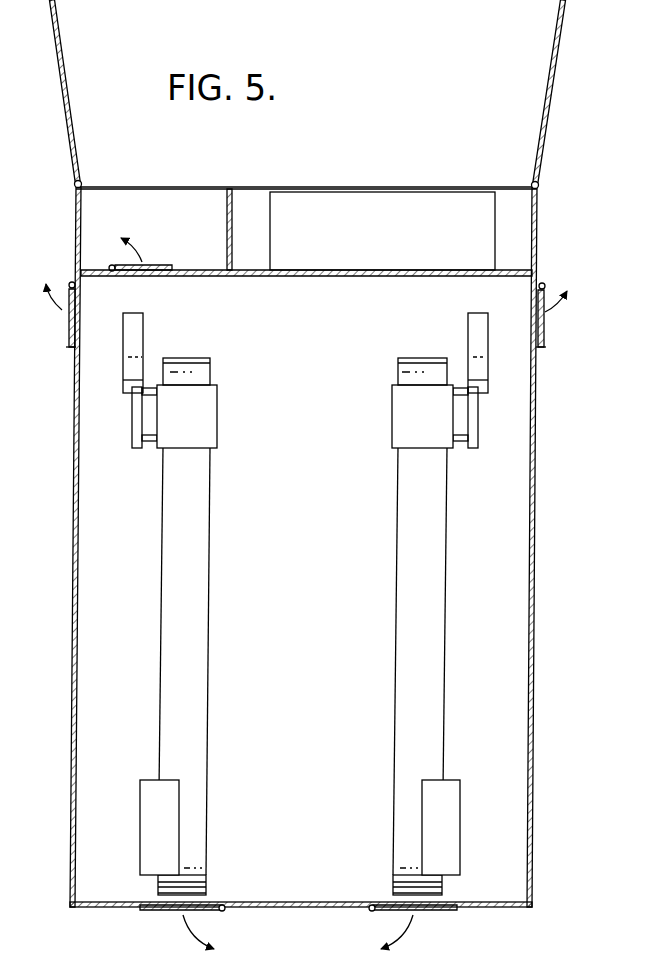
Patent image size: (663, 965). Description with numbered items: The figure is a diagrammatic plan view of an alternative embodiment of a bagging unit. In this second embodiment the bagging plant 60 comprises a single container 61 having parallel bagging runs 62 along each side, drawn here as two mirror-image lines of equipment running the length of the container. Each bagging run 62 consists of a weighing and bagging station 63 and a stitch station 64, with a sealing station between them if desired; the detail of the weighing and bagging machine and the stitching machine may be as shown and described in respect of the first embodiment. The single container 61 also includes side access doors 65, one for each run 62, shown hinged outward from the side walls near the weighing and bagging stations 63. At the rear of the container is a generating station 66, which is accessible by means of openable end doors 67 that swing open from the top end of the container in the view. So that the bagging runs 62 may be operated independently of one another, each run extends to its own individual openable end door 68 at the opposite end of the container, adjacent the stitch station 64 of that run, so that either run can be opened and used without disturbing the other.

The bagging plant 60 is at (560, 466).
The single container 61 is at (535, 571).
The bagging run 62 is at (173, 722).
The weighing and bagging station 63 is at (137, 398).
The stitch station 64 is at (148, 837).
The side access door 65 is at (70, 320).
The rear generating station 66 is at (401, 200).
The openable end door 67 is at (60, 62).
The individual openable end door 68 is at (163, 913).